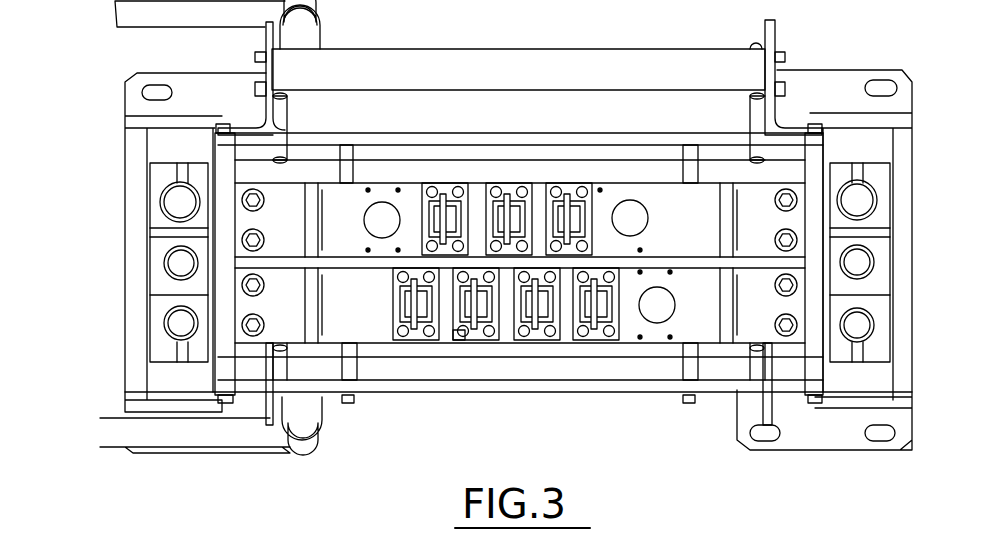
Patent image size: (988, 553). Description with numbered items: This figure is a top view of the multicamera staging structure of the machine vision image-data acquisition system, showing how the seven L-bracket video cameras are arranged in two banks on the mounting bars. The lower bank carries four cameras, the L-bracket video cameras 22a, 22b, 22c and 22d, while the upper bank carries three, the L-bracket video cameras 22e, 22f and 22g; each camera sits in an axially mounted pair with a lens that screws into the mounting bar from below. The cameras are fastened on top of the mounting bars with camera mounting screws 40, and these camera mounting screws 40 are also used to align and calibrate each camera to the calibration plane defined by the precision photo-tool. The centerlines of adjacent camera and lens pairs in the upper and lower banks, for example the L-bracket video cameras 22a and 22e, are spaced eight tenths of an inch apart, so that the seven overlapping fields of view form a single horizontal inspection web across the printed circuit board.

The L-bracket video camera 22a is at (417, 342).
The L-bracket video camera 22b is at (480, 342).
The L-bracket video camera 22c is at (523, 342).
The L-bracket video camera 22d is at (597, 342).
The L-bracket video camera 22e is at (440, 185).
The L-bracket video camera 22f is at (508, 185).
The L-bracket video camera 22g is at (565, 185).
The camera mounting screw 40 is at (462, 342).